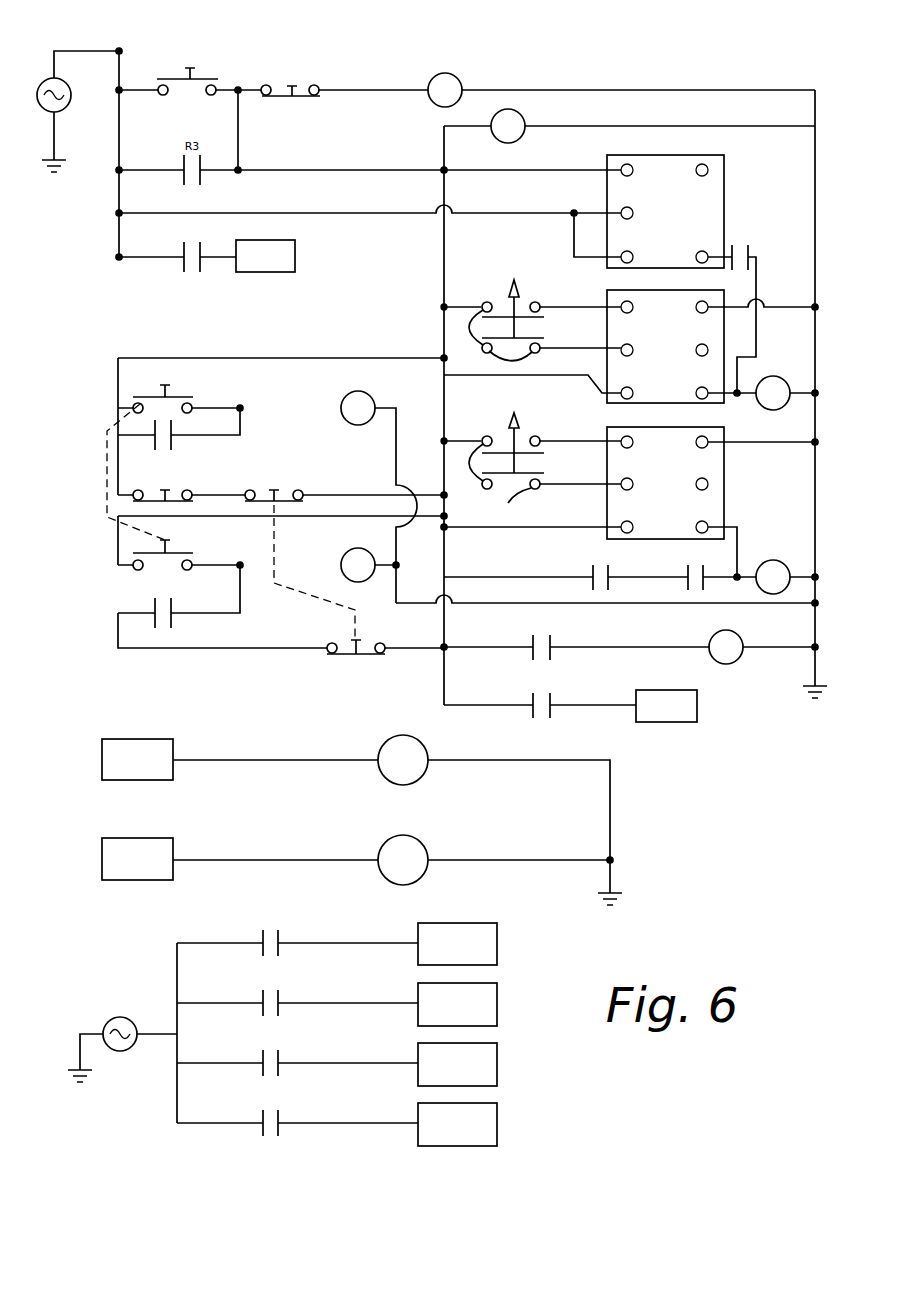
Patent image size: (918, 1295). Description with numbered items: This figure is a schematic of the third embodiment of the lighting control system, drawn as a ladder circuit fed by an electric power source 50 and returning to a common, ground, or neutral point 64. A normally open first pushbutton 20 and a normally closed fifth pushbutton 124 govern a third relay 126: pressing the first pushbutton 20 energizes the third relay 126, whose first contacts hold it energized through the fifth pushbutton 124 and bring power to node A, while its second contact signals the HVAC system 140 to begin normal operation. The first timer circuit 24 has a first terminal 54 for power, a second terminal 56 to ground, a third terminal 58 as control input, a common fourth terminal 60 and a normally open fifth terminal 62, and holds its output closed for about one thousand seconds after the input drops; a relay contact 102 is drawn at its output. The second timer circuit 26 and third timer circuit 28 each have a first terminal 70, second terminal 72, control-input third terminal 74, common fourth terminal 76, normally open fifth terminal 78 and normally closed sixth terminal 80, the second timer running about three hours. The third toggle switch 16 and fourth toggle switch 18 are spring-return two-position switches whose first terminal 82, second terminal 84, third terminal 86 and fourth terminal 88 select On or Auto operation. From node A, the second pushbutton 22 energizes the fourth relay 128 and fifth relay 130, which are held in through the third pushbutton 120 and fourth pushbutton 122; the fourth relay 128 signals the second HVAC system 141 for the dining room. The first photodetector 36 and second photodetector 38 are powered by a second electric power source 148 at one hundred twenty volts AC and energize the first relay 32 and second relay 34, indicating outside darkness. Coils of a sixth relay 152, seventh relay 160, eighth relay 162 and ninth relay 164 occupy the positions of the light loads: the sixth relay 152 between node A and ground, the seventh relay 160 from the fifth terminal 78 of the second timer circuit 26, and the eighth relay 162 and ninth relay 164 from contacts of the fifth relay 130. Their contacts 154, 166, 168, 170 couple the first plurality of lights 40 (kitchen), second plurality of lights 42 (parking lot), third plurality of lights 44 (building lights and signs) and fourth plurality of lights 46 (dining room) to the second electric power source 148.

The third toggle switch 16 is at (506, 263).
The fourth toggle switch 18 is at (446, 388).
The first pushbutton 20 is at (190, 52).
The second pushbutton 22 is at (181, 383).
The first timer circuit 24 is at (668, 155).
The second timer circuit 26 is at (690, 290).
The third timer circuit 28 is at (683, 427).
The first relay 32 is at (386, 778).
The second relay 34 is at (415, 838).
The first photodetector 36 is at (102, 762).
The second photodetector 38 is at (102, 843).
The first plurality of lights 40 is at (470, 923).
The second plurality of lights 42 is at (497, 1000).
The third plurality of lights 44 is at (483, 1146).
The fourth plurality of lights 46 is at (497, 1055).
The electric power source 50 is at (62, 112).
The first terminal 54 is at (621, 212).
The second terminal 56 is at (709, 170).
The third terminal 58 is at (627, 163).
The fourth terminal 60 is at (633, 257).
The fifth terminal 62 is at (702, 250).
The common, ground, or neutral point 64 is at (805, 693).
The first terminal 70 is at (627, 300).
The second terminal 72 is at (708, 312).
The third terminal 74 is at (621, 345).
The fourth terminal 76 is at (621, 390).
The fifth terminal 78 is at (695, 393).
The sixth terminal 80 is at (695, 350).
The first terminal 82 is at (488, 301).
The second terminal 84 is at (537, 301).
The third terminal 86 is at (463, 341).
The fourth terminal 88 is at (504, 364).
The relay R1 contact 102 is at (749, 251).
The third pushbutton 120 is at (146, 468).
The fourth pushbutton 122 is at (299, 468).
The fifth pushbutton 124 is at (291, 66).
The third relay 126 is at (464, 84).
The fourth relay 128 is at (343, 401).
The fifth relay 130 is at (369, 580).
The HVAC system 140 is at (270, 272).
The second HVAC system 141 is at (678, 722).
The second electric power source 148 is at (126, 1052).
The sixth relay 152 is at (517, 140).
The contacts of the sixth relay 154 is at (273, 953).
The seventh relay 160 is at (780, 377).
The eighth relay 162 is at (778, 561).
The ninth relay 164 is at (735, 664).
The contacts of the seventh relay 166 is at (273, 1015).
The contacts of the eighth relay 168 is at (272, 1073).
The contacts of the ninth relay 170 is at (273, 1138).